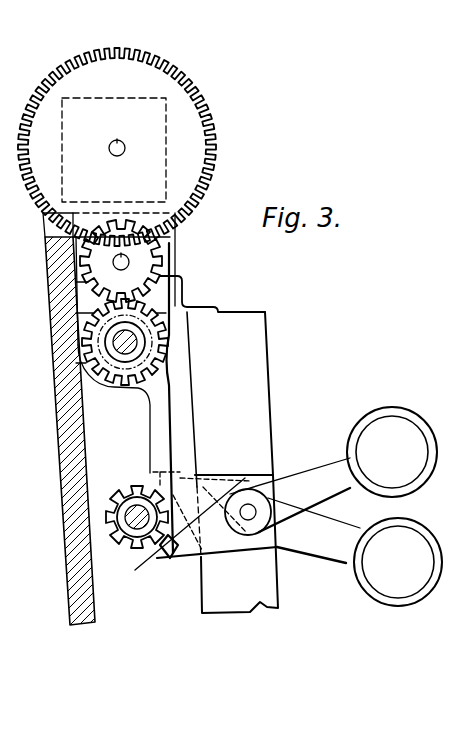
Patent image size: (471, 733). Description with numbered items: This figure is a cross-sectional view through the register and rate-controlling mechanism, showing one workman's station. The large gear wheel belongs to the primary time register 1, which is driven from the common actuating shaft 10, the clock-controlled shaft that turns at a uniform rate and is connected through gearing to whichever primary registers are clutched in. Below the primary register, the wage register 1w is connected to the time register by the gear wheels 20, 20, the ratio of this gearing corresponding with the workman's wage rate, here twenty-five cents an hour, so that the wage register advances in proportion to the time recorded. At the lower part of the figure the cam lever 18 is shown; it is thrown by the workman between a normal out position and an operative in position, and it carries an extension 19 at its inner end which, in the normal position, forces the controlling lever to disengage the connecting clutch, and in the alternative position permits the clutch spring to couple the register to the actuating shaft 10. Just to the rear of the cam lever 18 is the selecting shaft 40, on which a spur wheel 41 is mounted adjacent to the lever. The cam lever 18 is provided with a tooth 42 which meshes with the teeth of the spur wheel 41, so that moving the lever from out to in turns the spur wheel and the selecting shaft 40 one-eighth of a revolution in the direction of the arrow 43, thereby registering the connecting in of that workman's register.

The primary register 1 is at (165, 238).
The wage register 1w is at (167, 158).
The gear wheels 20 is at (168, 70).
The common actuating shaft 10 is at (125, 356).
The selecting shaft 40 is at (170, 532).
The spur wheel 41 is at (128, 518).
The arrow 43 is at (92, 500).
The tooth 42 is at (187, 480).
The extension 19 is at (167, 557).
The cam lever 18 is at (225, 505).